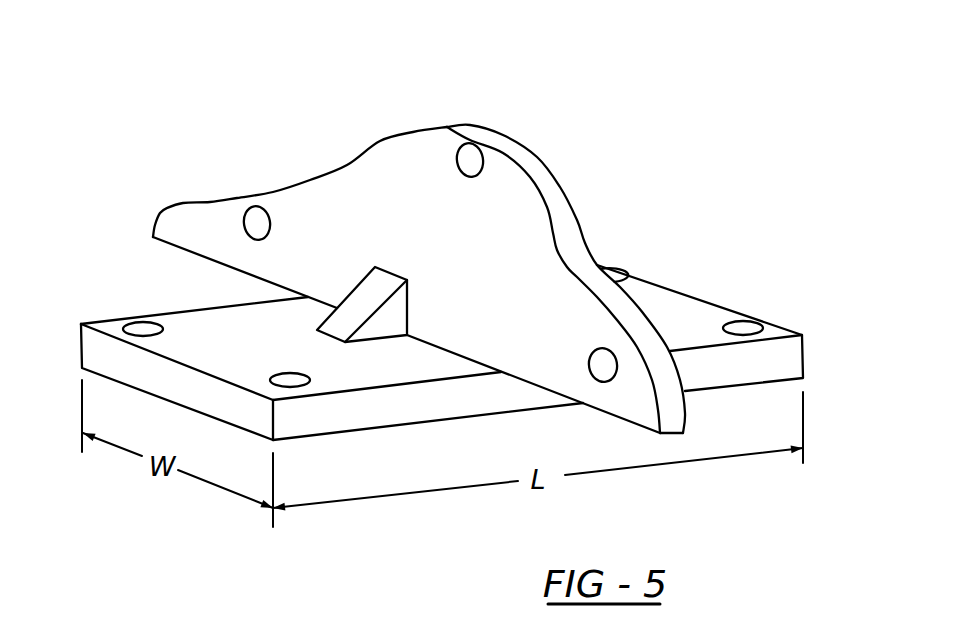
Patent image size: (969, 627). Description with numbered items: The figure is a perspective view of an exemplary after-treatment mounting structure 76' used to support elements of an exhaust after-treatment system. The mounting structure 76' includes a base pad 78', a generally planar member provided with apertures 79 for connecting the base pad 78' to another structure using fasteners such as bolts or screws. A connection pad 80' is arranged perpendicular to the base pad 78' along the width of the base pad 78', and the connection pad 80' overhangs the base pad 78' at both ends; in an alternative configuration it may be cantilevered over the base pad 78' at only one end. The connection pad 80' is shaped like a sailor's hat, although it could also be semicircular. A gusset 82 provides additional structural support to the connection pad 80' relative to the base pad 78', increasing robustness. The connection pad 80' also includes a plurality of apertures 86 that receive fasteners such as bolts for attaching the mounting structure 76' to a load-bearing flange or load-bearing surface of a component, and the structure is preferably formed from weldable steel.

The mounting structure 76' is at (451, 245).
The base pad 78' is at (451, 307).
The apertures 79 is at (125, 321).
The connection pad 80' is at (443, 241).
The gusset 82 is at (393, 316).
The apertures 86 is at (248, 209).